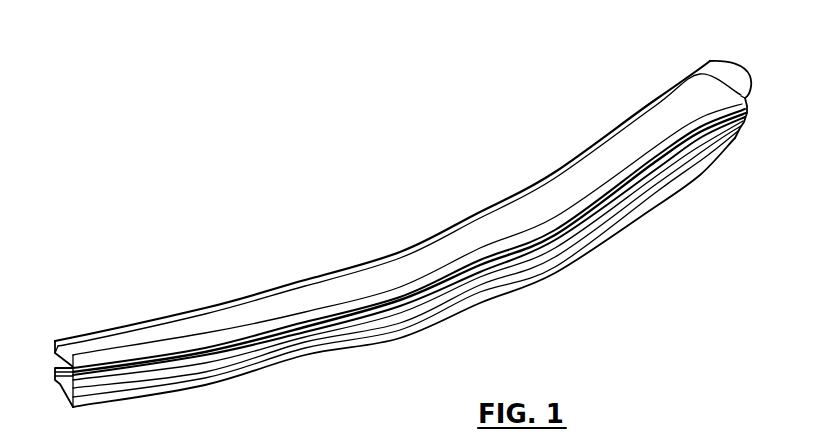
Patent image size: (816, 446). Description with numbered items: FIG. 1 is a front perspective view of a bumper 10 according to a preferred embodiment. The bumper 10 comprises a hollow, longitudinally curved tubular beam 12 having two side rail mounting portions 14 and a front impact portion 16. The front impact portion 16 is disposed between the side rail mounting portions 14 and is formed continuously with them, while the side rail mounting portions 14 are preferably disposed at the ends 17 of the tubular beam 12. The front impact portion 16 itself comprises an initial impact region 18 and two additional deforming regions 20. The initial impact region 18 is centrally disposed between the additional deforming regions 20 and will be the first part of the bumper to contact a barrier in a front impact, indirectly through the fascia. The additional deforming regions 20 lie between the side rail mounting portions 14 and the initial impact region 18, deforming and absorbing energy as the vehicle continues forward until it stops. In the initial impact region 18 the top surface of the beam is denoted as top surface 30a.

The bumper 10 is at (173, 220).
The tubular beam 12 is at (240, 294).
The side rail mounting portions 14 is at (80, 418).
The front impact portion 16 is at (282, 386).
The ends 17 is at (82, 323).
The initial impact region 18 is at (474, 349).
The additional deforming regions 20 is at (242, 418).
The top surface in the initial impact region 30a is at (741, 439).